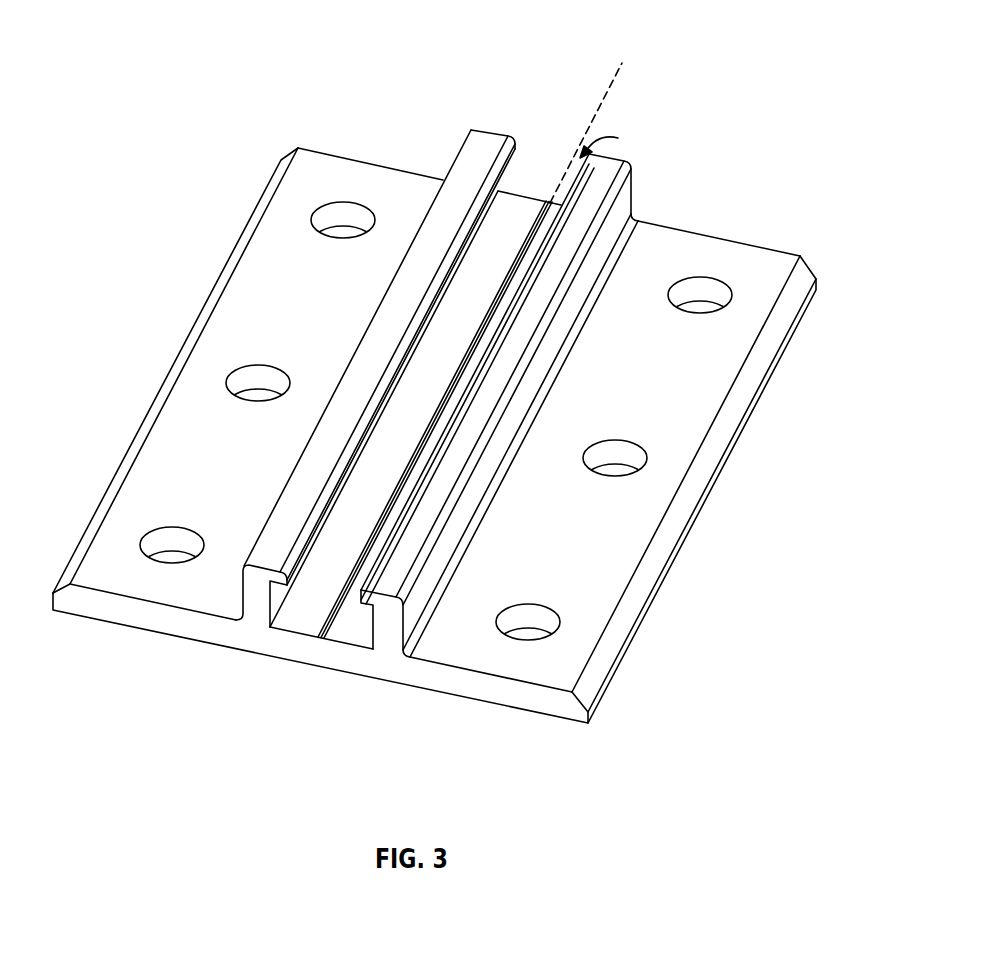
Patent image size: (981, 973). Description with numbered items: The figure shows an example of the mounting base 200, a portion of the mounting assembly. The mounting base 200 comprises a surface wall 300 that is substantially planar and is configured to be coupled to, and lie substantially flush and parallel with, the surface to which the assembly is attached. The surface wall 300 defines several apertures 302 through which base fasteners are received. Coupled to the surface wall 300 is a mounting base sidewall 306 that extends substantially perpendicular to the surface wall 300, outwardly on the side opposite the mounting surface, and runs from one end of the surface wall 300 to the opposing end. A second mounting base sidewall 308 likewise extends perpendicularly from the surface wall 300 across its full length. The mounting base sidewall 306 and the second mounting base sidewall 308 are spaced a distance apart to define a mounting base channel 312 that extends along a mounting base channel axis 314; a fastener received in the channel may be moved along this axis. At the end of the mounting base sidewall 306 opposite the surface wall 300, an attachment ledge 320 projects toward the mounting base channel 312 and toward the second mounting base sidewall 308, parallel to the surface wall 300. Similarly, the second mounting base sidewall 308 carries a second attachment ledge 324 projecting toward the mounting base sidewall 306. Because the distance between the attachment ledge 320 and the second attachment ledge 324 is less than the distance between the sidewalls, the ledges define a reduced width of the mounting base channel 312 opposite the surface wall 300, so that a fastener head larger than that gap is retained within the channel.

The mounting base 200 is at (145, 33).
The surface wall 300 is at (327, 180).
The apertures 302 is at (337, 218).
The mounting base sidewall 306 is at (388, 637).
The second mounting base sidewall 308 is at (255, 608).
The mounting base channel 312 is at (620, 142).
The mounting base channel axis 314 is at (617, 73).
The attachment ledge 320 is at (365, 603).
The second attachment ledge 324 is at (277, 578).